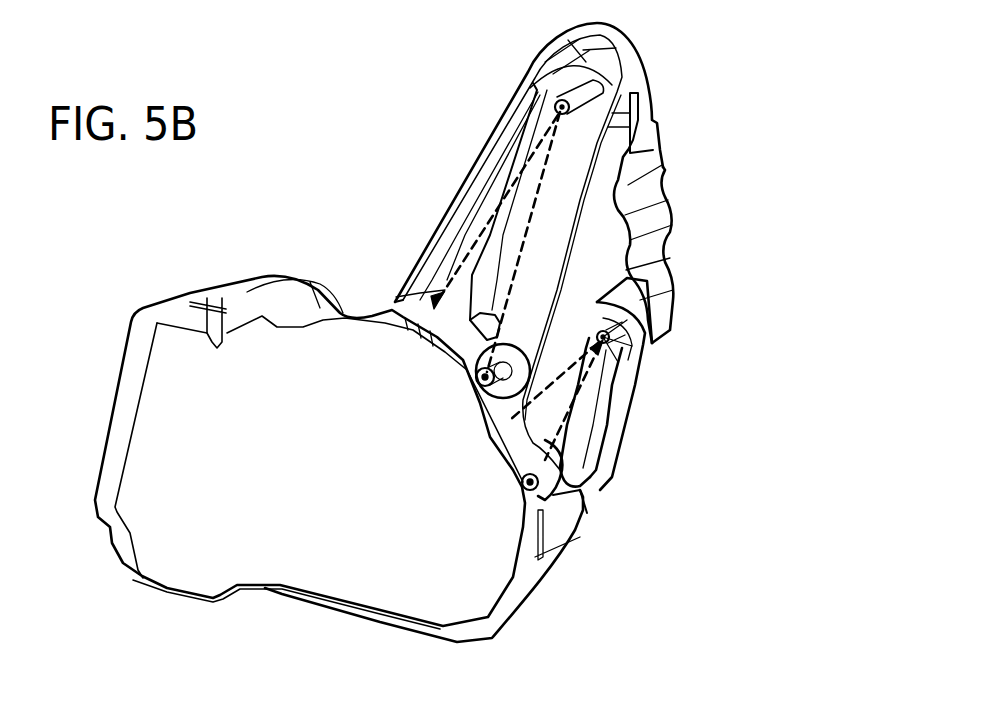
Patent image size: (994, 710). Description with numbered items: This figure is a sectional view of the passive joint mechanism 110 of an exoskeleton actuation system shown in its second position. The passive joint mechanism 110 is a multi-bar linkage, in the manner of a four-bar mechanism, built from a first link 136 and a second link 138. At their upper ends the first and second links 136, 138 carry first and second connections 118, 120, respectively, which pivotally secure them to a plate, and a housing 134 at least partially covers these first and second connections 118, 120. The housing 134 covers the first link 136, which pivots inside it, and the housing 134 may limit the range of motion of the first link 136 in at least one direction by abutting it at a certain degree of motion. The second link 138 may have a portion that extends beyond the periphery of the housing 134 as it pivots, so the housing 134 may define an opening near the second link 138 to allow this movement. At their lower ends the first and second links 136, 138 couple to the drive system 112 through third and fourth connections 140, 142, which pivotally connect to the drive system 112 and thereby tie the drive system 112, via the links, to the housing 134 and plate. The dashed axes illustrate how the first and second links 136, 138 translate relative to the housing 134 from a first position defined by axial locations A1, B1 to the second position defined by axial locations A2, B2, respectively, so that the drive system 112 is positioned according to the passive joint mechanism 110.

The passive joint mechanism 110 is at (670, 155).
The drive system 112 is at (270, 292).
The first connection 118 is at (560, 102).
The second connection 120 is at (633, 387).
The housing 134 is at (657, 222).
The first link 136 is at (545, 223).
The second link 138 is at (575, 433).
The third connection 140 is at (490, 368).
The fourth connection 142 is at (543, 510).
The axial location A1 is at (533, 155).
The axial location A2 is at (517, 258).
The axial location B1 is at (572, 403).
The axial location B2 is at (553, 443).